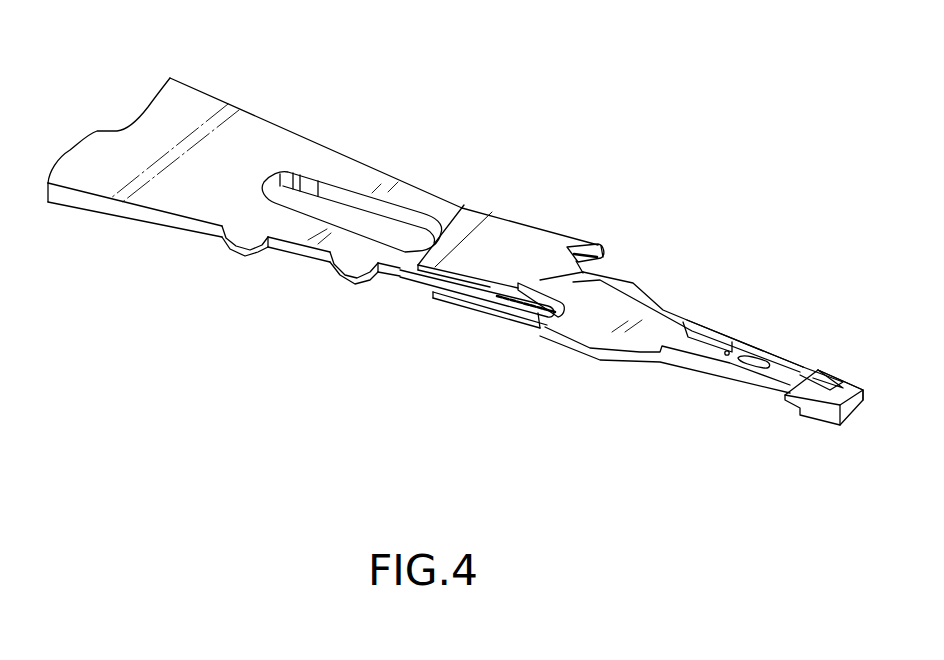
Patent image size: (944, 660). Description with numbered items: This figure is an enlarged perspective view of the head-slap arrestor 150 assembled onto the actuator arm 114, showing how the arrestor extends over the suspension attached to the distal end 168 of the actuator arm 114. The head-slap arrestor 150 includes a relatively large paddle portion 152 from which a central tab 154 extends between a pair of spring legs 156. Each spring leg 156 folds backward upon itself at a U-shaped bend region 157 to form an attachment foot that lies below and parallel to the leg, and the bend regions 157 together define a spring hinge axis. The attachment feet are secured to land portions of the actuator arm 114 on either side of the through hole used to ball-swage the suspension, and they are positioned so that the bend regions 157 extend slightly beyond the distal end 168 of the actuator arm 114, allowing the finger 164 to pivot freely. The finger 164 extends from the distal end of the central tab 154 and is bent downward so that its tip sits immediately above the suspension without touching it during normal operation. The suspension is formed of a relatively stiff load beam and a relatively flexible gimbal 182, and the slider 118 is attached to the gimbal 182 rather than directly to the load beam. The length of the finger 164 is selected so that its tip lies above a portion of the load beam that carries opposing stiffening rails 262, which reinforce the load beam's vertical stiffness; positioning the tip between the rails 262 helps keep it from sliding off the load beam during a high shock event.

The actuator arm 114 is at (203, 103).
The paddle portion 152 is at (470, 207).
The central tab 154 is at (565, 265).
The head-slap arrestor 150 is at (524, 207).
The spring legs 156 is at (583, 243).
The U-shaped bend region 157 is at (606, 253).
The finger 164 is at (663, 320).
The distal end of the actuator arm 168 is at (543, 328).
The stiffening rails 262 is at (780, 352).
The gimbal 182 is at (861, 384).
The slider 118 is at (828, 427).